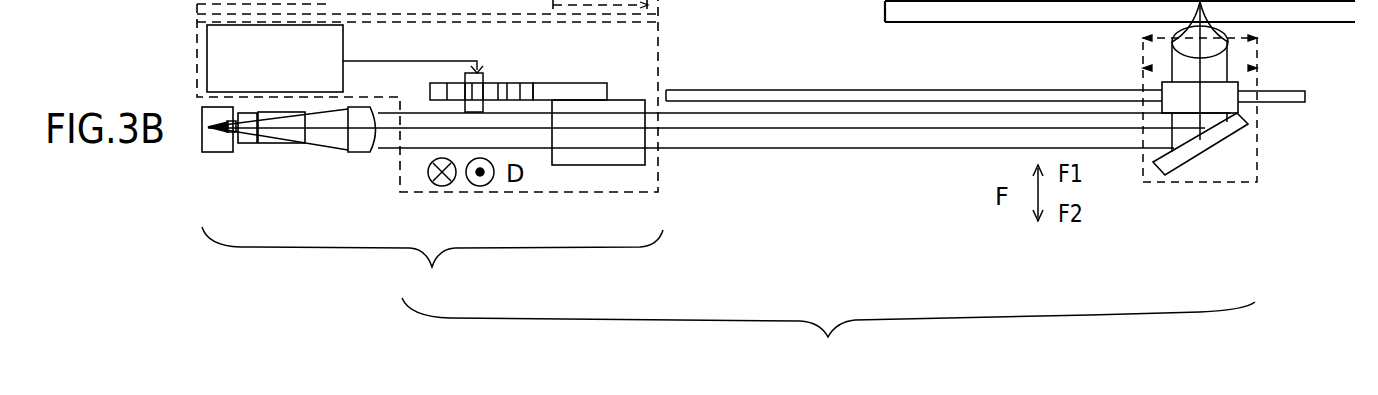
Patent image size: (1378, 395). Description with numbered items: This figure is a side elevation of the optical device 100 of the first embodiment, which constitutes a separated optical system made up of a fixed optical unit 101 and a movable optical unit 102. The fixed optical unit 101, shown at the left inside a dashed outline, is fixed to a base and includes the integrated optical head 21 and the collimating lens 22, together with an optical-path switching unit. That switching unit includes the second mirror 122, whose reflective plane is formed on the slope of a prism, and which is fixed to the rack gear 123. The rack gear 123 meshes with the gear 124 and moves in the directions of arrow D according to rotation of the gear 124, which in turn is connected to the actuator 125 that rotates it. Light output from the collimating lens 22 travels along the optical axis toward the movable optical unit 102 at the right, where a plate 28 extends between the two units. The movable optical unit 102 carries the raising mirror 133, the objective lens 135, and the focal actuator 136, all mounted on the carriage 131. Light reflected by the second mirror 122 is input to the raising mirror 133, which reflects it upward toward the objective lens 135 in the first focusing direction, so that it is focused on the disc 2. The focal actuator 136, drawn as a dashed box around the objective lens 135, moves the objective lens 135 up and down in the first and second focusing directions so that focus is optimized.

The optical disc 2 is at (885, 12).
The integrated optical head 21 is at (255, 147).
The collimating lens 22 is at (357, 153).
The flexible plate / base plate 28 is at (695, 90).
The optical device 100 is at (828, 333).
The fixed optical unit 101 is at (432, 262).
The movable optical unit 102 is at (1212, 185).
The second mirror 122 is at (635, 165).
The rack gear 123 is at (540, 83).
The gear 124 is at (430, 86).
The actuator 125 is at (343, 40).
The carriage 131 is at (1140, 185).
The raising mirror 133 is at (1228, 140).
The objective lens 135 is at (1168, 48).
The focal actuator 136 is at (1265, 60).